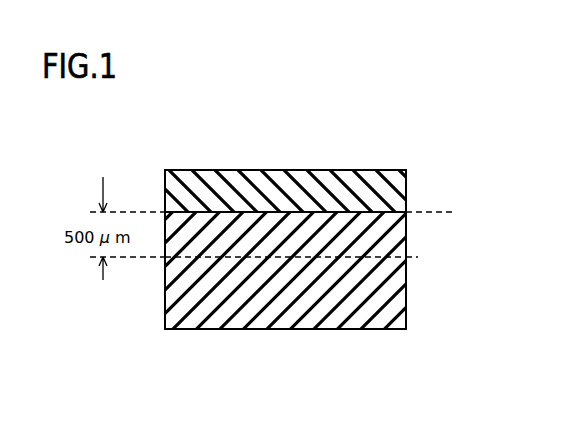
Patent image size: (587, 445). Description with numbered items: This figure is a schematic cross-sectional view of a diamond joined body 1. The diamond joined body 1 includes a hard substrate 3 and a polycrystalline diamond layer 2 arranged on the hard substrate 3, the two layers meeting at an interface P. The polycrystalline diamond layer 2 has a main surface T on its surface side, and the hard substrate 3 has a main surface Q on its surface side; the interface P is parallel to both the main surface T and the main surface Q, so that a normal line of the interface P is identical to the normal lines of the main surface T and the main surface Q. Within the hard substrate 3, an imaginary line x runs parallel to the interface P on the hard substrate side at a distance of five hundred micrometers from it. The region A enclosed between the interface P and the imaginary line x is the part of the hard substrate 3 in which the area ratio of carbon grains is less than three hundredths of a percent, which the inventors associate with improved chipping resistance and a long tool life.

The diamond joined body 1 is at (409, 125).
The polycrystalline diamond layer 2 is at (380, 190).
The hard substrate 3 is at (406, 212).
The region A is at (406, 212).
The interface P is at (215, 212).
The main surface T is at (268, 170).
The imaginary line x is at (316, 250).
The main surface Q is at (285, 330).